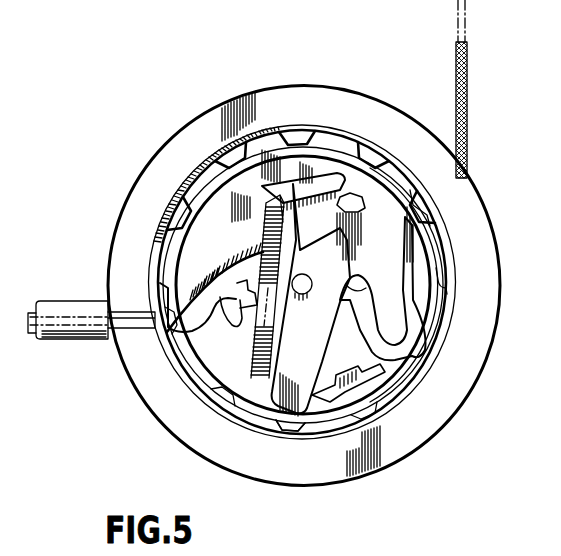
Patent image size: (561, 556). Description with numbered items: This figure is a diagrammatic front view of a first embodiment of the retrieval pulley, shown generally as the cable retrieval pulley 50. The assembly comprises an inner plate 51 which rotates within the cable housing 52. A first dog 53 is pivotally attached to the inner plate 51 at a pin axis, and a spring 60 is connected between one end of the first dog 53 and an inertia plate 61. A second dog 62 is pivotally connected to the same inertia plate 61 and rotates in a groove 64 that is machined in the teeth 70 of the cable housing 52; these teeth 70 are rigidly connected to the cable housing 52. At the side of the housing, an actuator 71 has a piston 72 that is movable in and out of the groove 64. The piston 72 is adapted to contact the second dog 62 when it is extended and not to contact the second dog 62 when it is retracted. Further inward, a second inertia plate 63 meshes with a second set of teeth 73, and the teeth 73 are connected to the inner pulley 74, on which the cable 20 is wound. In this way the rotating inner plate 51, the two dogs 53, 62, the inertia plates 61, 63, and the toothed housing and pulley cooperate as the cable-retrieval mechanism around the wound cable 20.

The cable 20 is at (470, 93).
The cable retrieval pulley 50 is at (188, 74).
The inner plate 51 is at (287, 195).
The cable housing 52 is at (368, 95).
The first dog 53 is at (305, 196).
The spring 60 is at (205, 378).
The inertia plate 61 is at (410, 300).
The second dog 62 is at (250, 247).
The second inertia plate 63 is at (368, 172).
The groove 64 is at (311, 424).
The teeth 70 is at (395, 400).
The actuator 71 is at (63, 300).
The piston 72 is at (126, 330).
The second set of teeth 73 is at (297, 240).
The inner pulley 74 is at (438, 272).